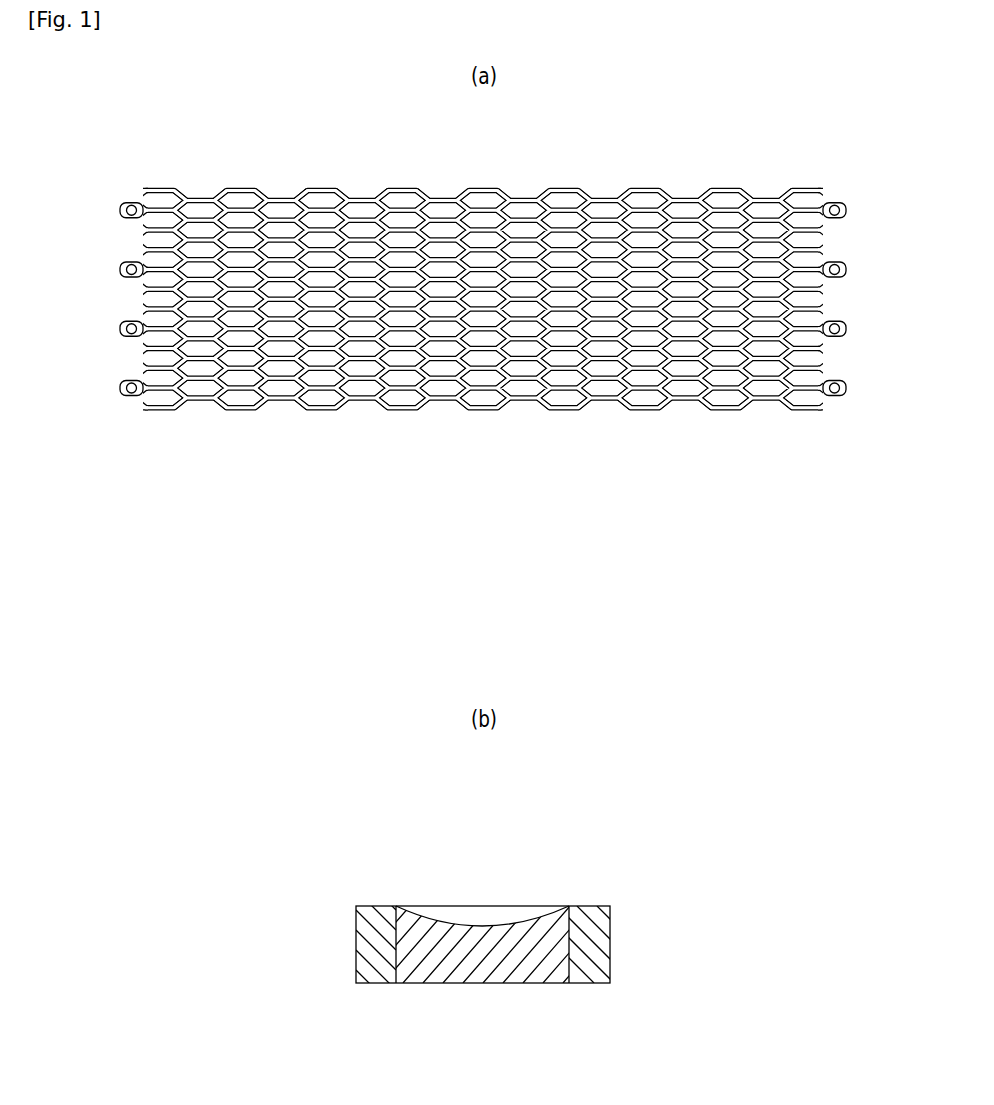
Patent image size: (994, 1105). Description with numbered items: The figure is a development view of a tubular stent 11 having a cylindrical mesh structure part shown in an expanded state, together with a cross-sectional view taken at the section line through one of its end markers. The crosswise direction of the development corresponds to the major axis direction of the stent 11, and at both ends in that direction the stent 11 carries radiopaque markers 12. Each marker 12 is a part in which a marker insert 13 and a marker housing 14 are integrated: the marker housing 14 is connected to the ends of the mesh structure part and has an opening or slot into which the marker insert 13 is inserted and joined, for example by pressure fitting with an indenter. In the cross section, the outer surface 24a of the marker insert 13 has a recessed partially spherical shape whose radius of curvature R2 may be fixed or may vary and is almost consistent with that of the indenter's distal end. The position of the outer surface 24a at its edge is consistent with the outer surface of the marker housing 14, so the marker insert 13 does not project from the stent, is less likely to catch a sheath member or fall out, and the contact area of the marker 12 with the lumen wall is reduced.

The stent 11 is at (567, 168).
The radiopaque marker 12 is at (451, 579).
The marker insert 13 is at (127, 206).
The marker housing 14 is at (135, 203).
The outer surface of the marker insert 24a is at (304, 589).
The radius of curvature R2 is at (482, 874).